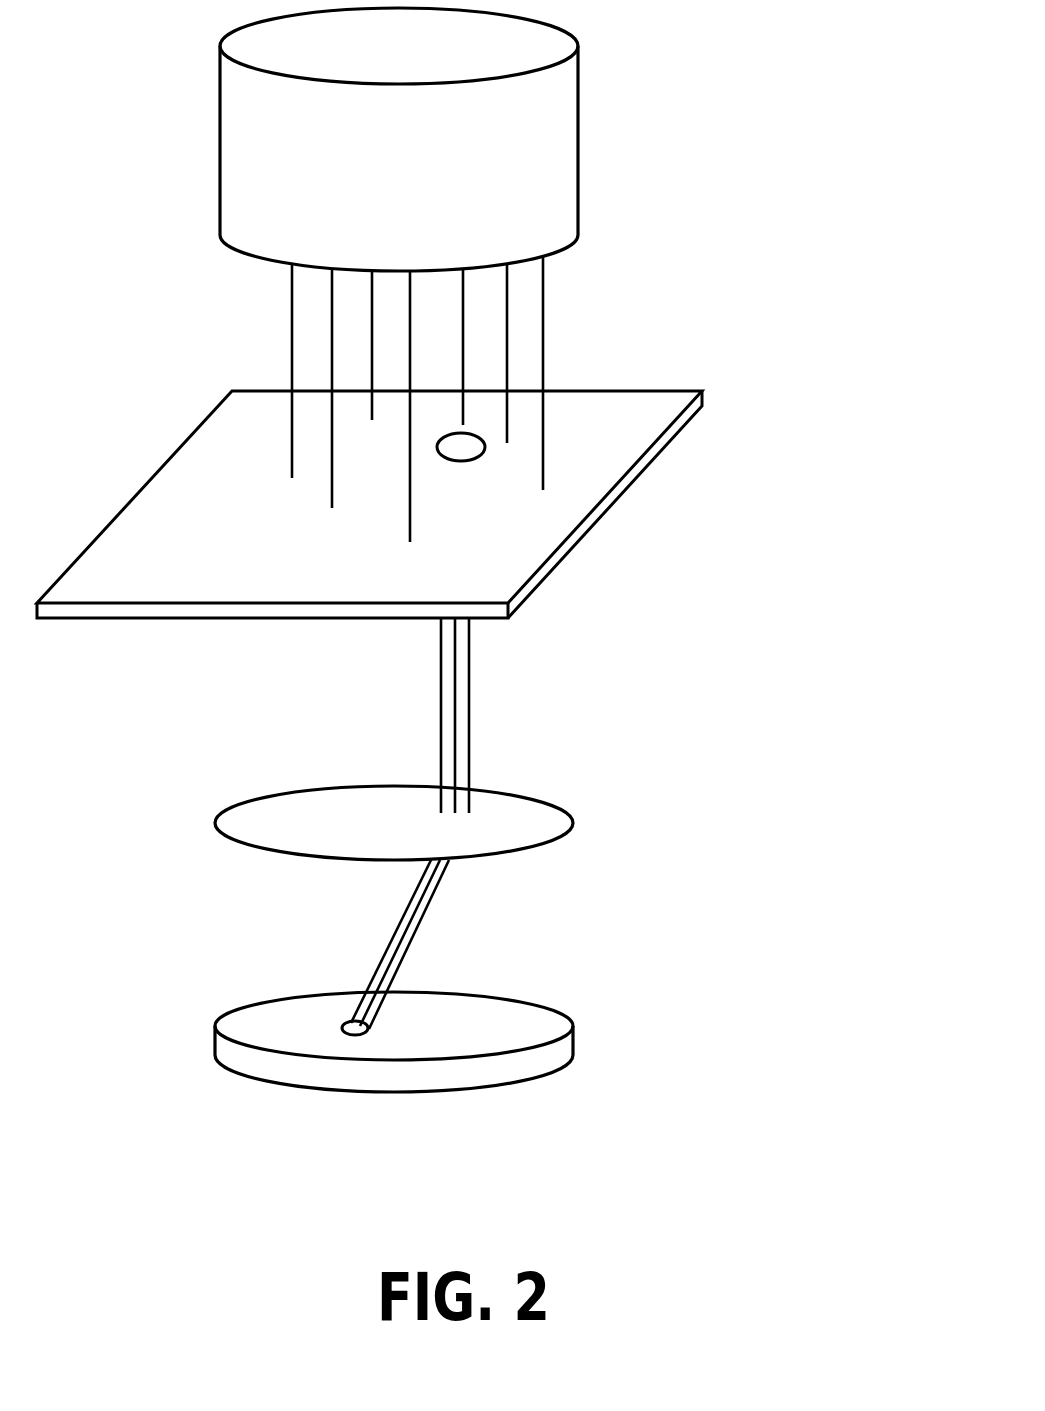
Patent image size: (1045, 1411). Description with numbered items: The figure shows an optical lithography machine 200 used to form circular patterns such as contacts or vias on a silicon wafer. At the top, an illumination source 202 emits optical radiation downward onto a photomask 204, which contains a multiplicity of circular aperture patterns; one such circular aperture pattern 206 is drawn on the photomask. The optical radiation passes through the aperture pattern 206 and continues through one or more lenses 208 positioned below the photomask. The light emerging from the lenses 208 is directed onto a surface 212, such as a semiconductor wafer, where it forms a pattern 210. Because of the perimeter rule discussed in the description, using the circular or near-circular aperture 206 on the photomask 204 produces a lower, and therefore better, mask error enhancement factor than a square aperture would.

The optical lithography machine 200 is at (778, 96).
The illumination source 202 is at (580, 141).
The photomask 204 is at (593, 525).
The circular aperture pattern 206 is at (461, 461).
The lens 208 is at (573, 823).
The pattern 210 is at (340, 1028).
The surface 212 is at (573, 1040).